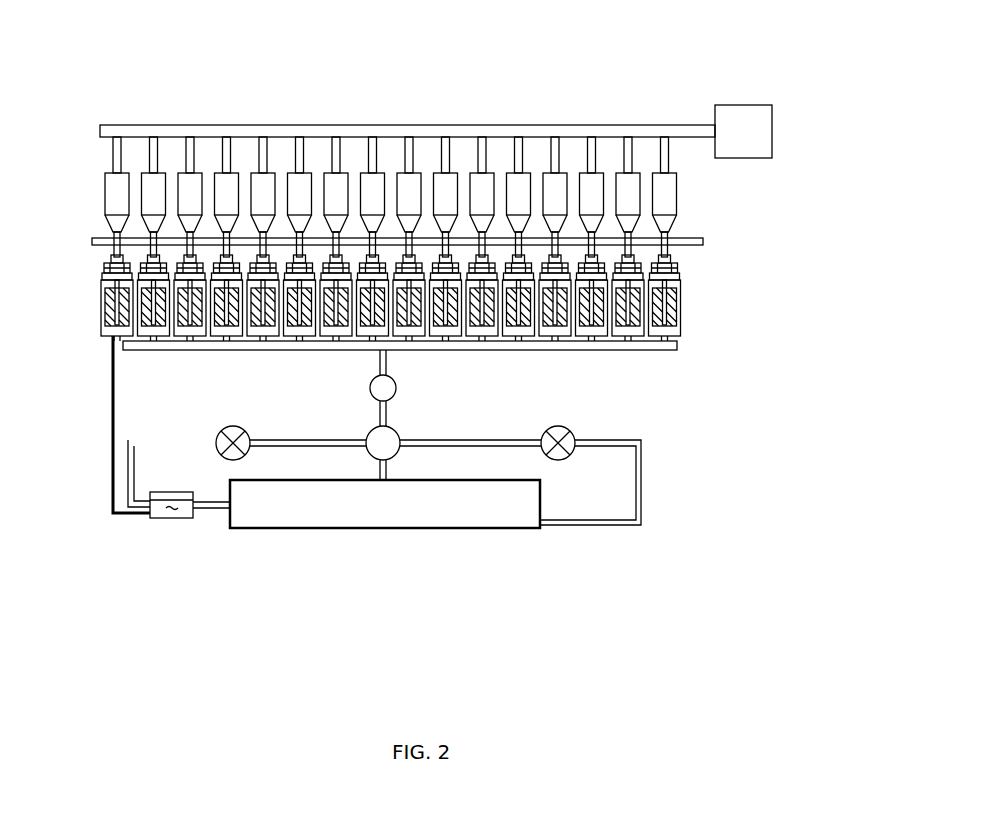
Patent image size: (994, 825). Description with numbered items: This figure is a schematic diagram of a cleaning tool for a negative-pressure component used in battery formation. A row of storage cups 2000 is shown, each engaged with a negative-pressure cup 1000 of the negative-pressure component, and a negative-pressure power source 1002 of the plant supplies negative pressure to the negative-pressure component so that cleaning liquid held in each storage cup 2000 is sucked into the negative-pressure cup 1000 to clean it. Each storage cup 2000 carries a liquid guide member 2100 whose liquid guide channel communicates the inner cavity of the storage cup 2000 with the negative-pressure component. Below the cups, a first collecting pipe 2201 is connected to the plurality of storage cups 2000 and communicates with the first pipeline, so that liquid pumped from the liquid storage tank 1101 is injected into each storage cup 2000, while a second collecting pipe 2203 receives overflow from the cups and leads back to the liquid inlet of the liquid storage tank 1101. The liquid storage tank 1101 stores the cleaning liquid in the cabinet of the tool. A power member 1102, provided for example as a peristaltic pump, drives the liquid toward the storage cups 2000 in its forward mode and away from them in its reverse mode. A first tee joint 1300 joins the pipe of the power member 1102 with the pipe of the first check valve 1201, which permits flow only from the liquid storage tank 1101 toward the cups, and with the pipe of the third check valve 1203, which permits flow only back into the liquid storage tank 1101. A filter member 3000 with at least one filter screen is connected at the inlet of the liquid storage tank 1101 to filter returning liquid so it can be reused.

The negative-pressure cup 1000 is at (308, 177).
The negative-pressure power source 1002 is at (735, 107).
The liquid guide member 2100 is at (676, 268).
The storage cup 2000 is at (678, 301).
The first collecting pipe 2201 is at (653, 350).
The second collecting pipe 2203 is at (620, 352).
The power member 1102 is at (370, 390).
The first tee joint 1300 is at (387, 462).
The first check valve 1201 is at (561, 455).
The third check valve 1203 is at (240, 458).
The liquid storage tank 1101 is at (522, 518).
The filter member 3000 is at (187, 519).